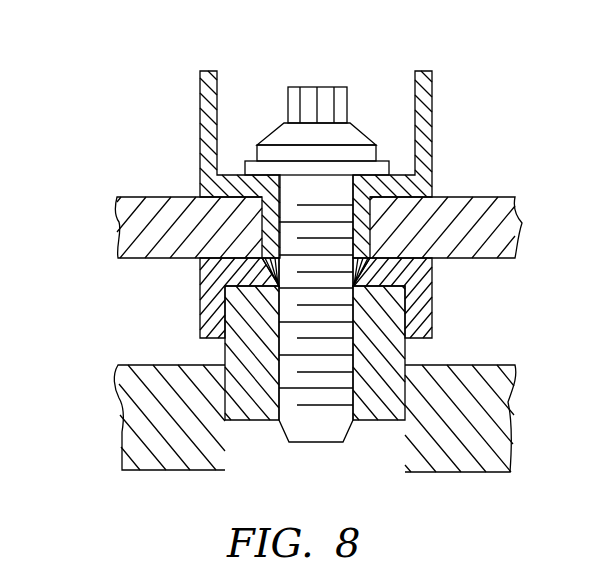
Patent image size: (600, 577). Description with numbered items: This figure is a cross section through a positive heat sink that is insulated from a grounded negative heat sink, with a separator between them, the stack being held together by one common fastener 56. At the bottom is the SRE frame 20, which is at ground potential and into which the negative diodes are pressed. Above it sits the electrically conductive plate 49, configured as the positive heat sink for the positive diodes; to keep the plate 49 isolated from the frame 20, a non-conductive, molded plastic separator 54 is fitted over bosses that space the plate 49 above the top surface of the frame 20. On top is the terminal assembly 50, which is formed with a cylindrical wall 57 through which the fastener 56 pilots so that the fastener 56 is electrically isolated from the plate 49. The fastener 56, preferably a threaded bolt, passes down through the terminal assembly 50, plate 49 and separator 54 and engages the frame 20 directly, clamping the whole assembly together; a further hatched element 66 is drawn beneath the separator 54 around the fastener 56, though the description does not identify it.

The SRE frame 20 is at (123, 418).
The plate 49 is at (117, 206).
The terminal assembly 50 is at (200, 123).
The separator 54 is at (198, 300).
The fastener 56 is at (305, 86).
The cylindrical wall 57 is at (416, 75).
The spacer block 66 is at (405, 350).